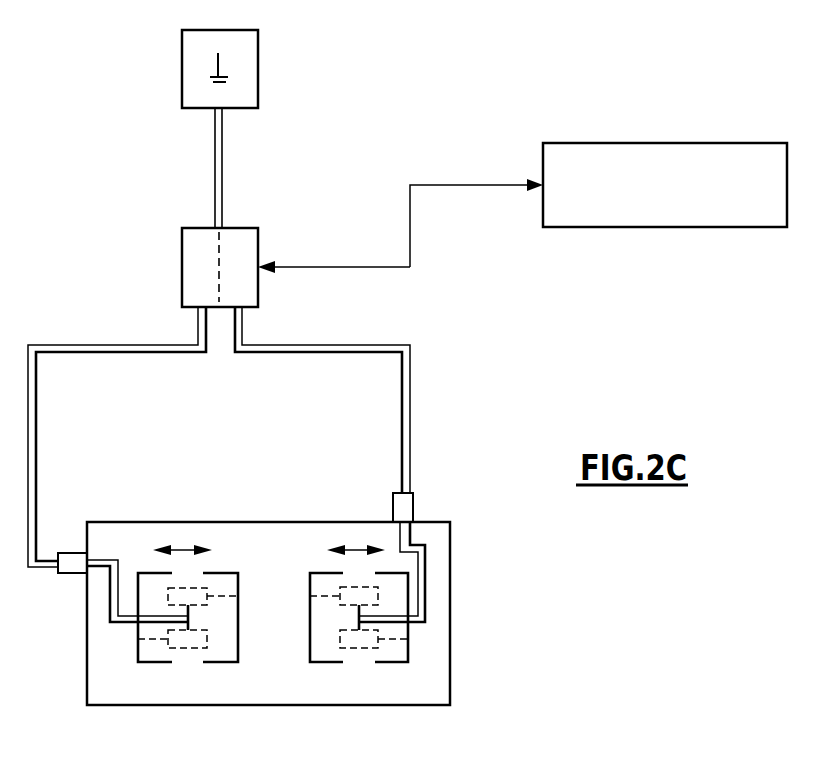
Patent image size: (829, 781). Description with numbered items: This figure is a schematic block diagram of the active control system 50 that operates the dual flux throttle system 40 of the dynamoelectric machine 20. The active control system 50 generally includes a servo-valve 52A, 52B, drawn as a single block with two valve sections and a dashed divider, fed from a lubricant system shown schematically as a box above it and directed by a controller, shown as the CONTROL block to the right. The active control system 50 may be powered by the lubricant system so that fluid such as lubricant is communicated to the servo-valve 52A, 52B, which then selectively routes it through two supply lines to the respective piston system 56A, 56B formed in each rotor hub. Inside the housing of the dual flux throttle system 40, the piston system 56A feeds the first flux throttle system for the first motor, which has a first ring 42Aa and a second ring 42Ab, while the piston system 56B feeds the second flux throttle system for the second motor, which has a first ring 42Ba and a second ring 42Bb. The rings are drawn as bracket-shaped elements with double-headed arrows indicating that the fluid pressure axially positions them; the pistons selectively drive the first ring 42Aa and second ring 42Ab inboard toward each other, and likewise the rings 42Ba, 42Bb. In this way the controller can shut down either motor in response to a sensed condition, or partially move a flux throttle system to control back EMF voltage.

The dynamoelectric machine 20 is at (484, 646).
The dual flux throttle system 40 is at (428, 585).
The active control system 50 is at (562, 66).
The servo-valve 52A is at (260, 241).
The servo-valve 52B is at (190, 272).
The piston system 56A is at (397, 626).
The piston system 56B is at (142, 632).
The first ring 42Aa is at (395, 662).
The second ring 42Ab is at (340, 662).
The first ring 42Ba is at (212, 662).
The second ring 42Bb is at (155, 662).